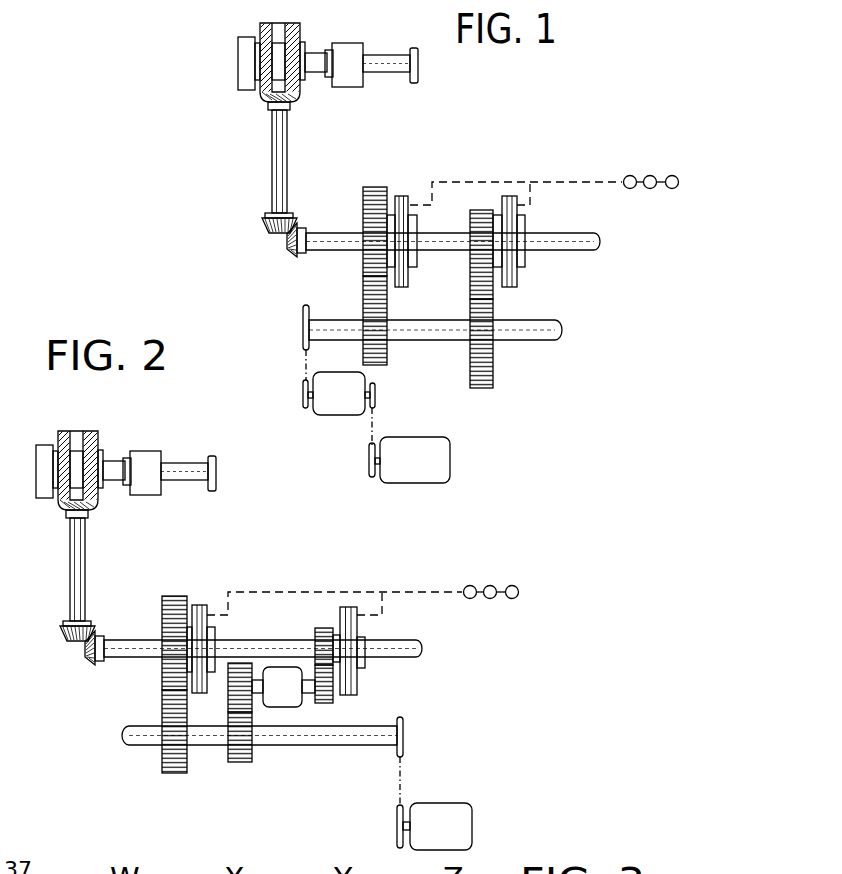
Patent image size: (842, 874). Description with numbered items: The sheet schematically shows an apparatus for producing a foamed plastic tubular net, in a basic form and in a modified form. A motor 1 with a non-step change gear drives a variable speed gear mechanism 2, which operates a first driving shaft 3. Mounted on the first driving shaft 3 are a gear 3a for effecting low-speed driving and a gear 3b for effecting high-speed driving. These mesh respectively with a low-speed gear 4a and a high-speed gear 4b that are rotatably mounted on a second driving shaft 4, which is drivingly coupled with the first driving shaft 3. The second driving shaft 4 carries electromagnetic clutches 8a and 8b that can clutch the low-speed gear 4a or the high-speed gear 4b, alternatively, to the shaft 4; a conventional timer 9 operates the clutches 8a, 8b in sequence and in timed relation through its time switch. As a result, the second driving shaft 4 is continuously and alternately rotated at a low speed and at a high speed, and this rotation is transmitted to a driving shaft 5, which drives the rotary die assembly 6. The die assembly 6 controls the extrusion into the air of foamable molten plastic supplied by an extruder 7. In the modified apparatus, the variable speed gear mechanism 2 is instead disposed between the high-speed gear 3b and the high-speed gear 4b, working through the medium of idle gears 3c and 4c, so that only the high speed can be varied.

In FIG. 1, the motor 1 is at (417, 445).
In FIG. 2, the motor 1 is at (438, 815).
In FIG. 1, the variable speed gear mechanism 2 is at (337, 405).
In FIG. 2, the variable speed gear mechanism 2 is at (285, 696).
In FIG. 1, the first driving shaft 3 is at (534, 331).
In FIG. 2, the first driving shaft 3 is at (355, 741).
In FIG. 1, the gear 3a is at (387, 350).
In FIG. 2, the gear 3a is at (175, 765).
In FIG. 1, the gear 3b is at (485, 388).
In FIG. 2, the gear 3b is at (238, 763).
In FIG. 2, the idle gear 3c is at (234, 691).
In FIG. 1, the second driving shaft 4 is at (558, 240).
In FIG. 2, the second driving shaft 4 is at (250, 645).
In FIG. 1, the low-speed gear 4a is at (378, 190).
In FIG. 2, the low-speed gear 4a is at (173, 600).
In FIG. 1, the high-speed gear 4b is at (472, 220).
In FIG. 2, the high-speed gear 4b is at (318, 632).
In FIG. 2, the idle gear 4c is at (331, 698).
In FIG. 1, the driving shaft 5 is at (274, 160).
In FIG. 2, the driving shaft 5 is at (74, 557).
In FIG. 1, the die assembly 6 is at (233, 51).
In FIG. 2, the die assembly 6 is at (45, 438).
In FIG. 1, the extruder 7 is at (387, 58).
In FIG. 2, the extruder 7 is at (176, 468).
In FIG. 1, the electromagnetic clutch 8a is at (402, 196).
In FIG. 2, the electromagnetic clutch 8a is at (200, 606).
In FIG. 1, the electromagnetic clutch 8b is at (505, 196).
In FIG. 2, the electromagnetic clutch 8b is at (350, 608).
In FIG. 1, the timer 9 is at (649, 175).
In FIG. 2, the timer 9 is at (489, 585).